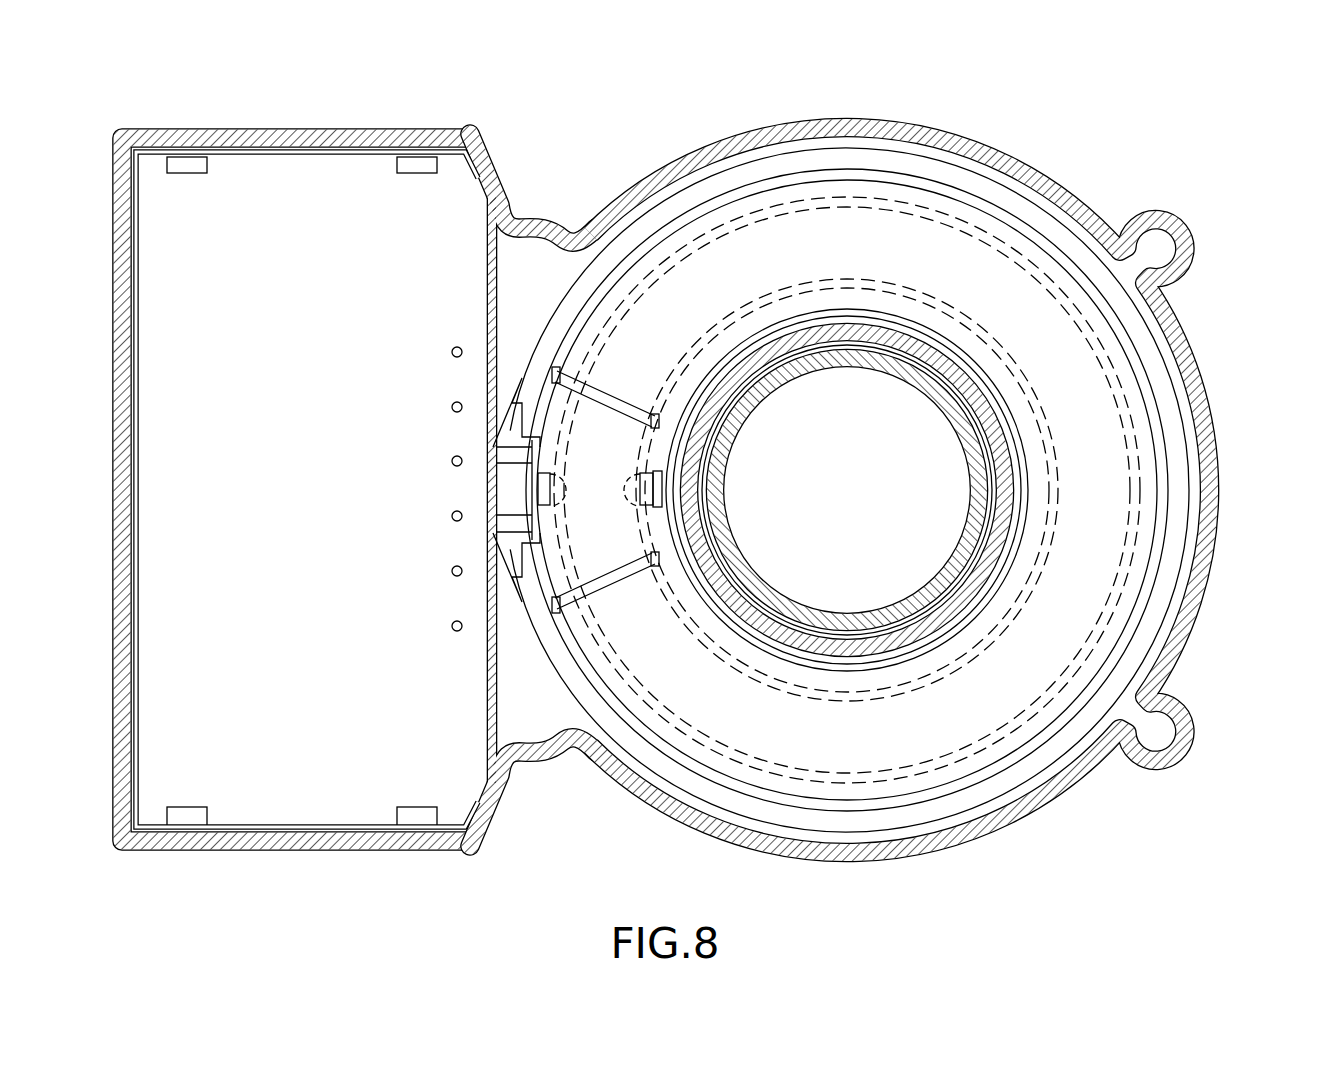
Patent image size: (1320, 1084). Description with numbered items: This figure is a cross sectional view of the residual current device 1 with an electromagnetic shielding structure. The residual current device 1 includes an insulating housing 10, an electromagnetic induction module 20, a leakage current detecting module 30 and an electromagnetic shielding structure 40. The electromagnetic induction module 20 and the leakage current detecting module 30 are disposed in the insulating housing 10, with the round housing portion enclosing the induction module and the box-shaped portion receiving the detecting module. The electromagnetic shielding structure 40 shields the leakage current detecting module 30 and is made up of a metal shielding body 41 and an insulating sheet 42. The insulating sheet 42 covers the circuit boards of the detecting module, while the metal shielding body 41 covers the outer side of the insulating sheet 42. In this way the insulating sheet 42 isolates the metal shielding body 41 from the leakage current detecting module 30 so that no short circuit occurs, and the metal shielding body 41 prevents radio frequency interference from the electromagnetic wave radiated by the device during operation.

The residual current device 1 is at (672, 66).
The insulating housing 10 is at (1068, 170).
The electromagnetic induction module 20 is at (1072, 451).
The leakage current detecting module 30 is at (248, 166).
The electromagnetic shielding structure 40 is at (366, 443).
The metal shielding body 41 is at (307, 456).
The insulating sheet 42 is at (472, 177).